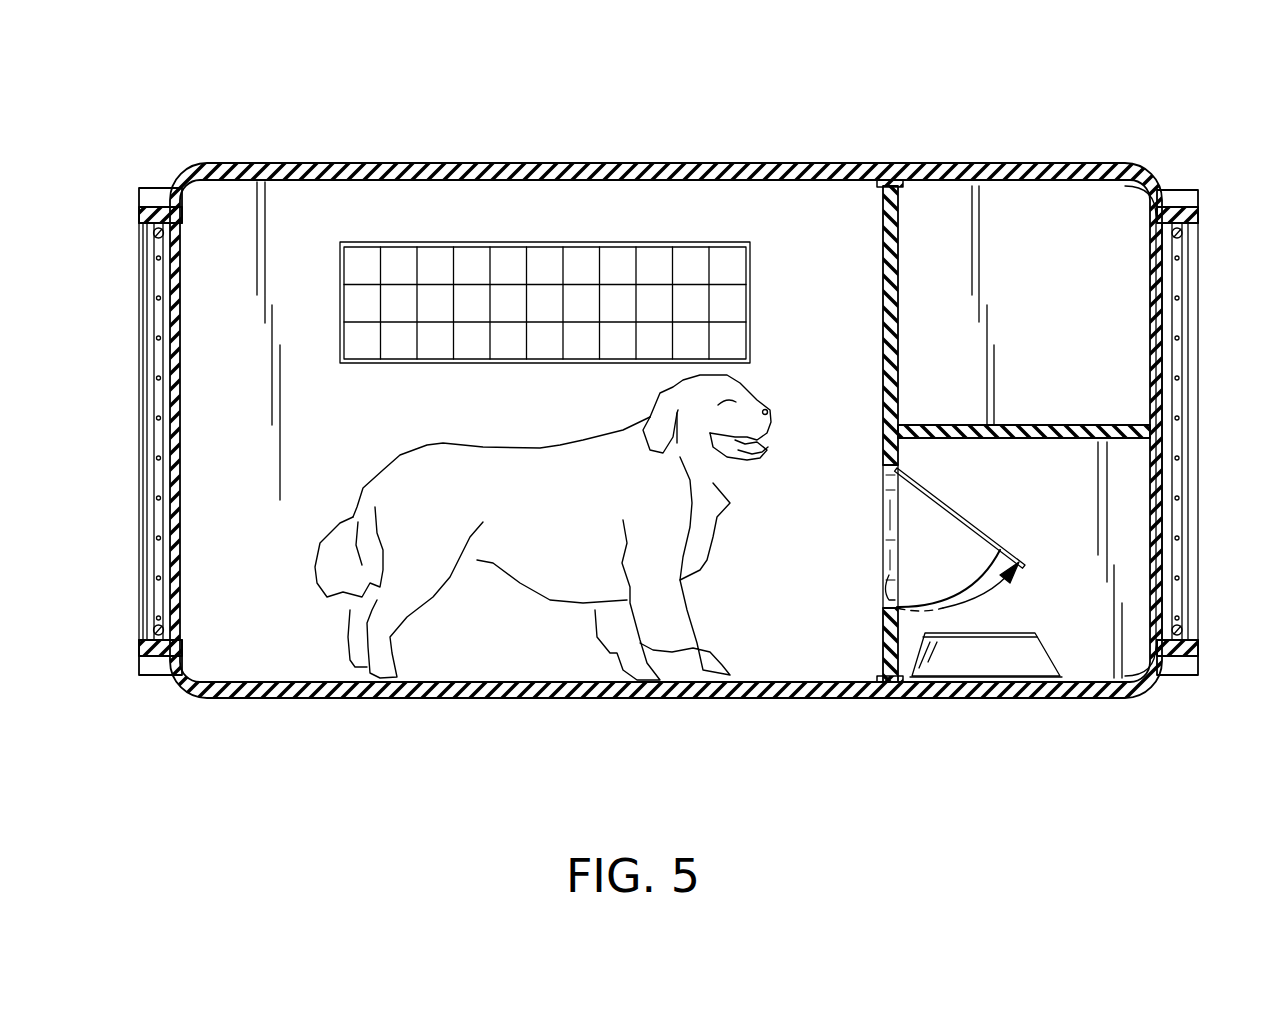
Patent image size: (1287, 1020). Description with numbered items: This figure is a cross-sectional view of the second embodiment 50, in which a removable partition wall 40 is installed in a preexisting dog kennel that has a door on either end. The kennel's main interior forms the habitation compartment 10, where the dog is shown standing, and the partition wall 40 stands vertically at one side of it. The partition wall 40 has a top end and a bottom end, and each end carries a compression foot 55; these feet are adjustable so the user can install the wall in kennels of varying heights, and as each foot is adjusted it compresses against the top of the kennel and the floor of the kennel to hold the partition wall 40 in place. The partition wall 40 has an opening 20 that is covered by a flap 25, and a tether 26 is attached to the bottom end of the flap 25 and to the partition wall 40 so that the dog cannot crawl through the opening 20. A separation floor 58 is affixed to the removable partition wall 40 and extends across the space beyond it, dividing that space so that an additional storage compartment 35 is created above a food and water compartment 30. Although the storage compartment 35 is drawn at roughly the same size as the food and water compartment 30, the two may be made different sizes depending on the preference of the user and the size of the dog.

The second embodiment 50 is at (262, 128).
The habitation compartment 10 is at (462, 202).
The partition wall 40 is at (883, 242).
The compression foot 55 is at (893, 180).
The storage compartment 35 is at (1068, 212).
The separation floor 58 is at (1102, 425).
The opening 20 is at (888, 505).
The flap 25 is at (973, 528).
The tether 26 is at (953, 590).
The food and water compartment 30 is at (1083, 615).